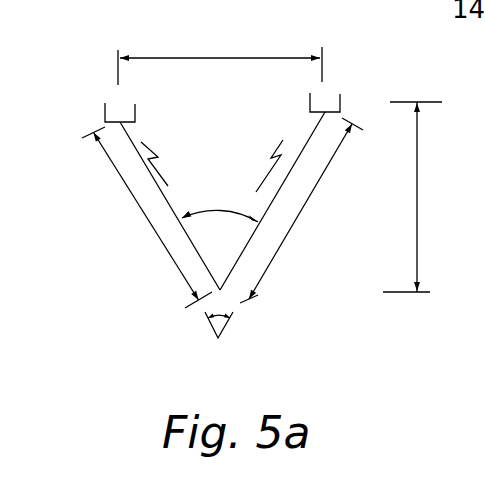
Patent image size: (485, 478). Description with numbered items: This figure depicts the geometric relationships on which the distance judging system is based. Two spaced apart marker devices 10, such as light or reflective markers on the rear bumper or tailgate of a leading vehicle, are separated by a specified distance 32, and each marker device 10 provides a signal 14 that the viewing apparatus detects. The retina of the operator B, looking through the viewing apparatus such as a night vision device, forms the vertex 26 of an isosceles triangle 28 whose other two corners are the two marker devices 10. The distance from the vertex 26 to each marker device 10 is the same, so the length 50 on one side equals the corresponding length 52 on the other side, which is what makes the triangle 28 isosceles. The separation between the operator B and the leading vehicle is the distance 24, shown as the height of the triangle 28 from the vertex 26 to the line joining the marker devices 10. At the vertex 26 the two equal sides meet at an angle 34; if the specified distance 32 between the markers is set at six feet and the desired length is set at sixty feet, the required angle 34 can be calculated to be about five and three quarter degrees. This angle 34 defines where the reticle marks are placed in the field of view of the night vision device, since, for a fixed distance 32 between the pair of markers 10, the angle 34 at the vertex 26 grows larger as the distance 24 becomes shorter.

The marker device 10 is at (365, 58).
The signal 14 is at (147, 137).
The distance 24 is at (417, 197).
The vertex 26 is at (220, 290).
The isosceles triangle 28 is at (110, 193).
The specified distance 32 is at (208, 58).
The angle 34 is at (204, 211).
The length 50 is at (146, 230).
The second arm length 52 is at (287, 234).
The operator B is at (203, 325).